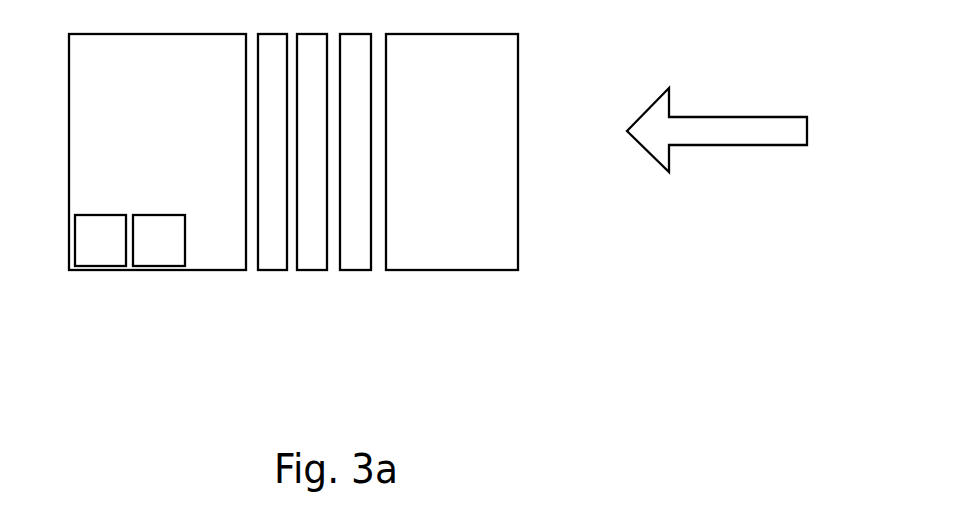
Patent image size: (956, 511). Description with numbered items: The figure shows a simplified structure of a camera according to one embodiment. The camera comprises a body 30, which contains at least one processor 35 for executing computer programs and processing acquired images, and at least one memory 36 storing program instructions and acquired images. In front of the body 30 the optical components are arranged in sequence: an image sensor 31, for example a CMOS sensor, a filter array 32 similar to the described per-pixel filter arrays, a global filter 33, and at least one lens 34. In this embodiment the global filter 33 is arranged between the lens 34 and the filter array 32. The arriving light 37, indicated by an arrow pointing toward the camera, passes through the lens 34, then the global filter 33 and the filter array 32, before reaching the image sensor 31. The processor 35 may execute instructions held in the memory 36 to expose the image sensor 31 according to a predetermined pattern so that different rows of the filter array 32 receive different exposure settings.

The body 30 is at (158, 270).
The image sensor 31 is at (271, 270).
The filter array 32 is at (308, 270).
The global filter 33 is at (355, 270).
The lens 34 is at (473, 270).
The processor 35 is at (100, 240).
The memory 36 is at (159, 240).
The arriving light 37 is at (702, 145).